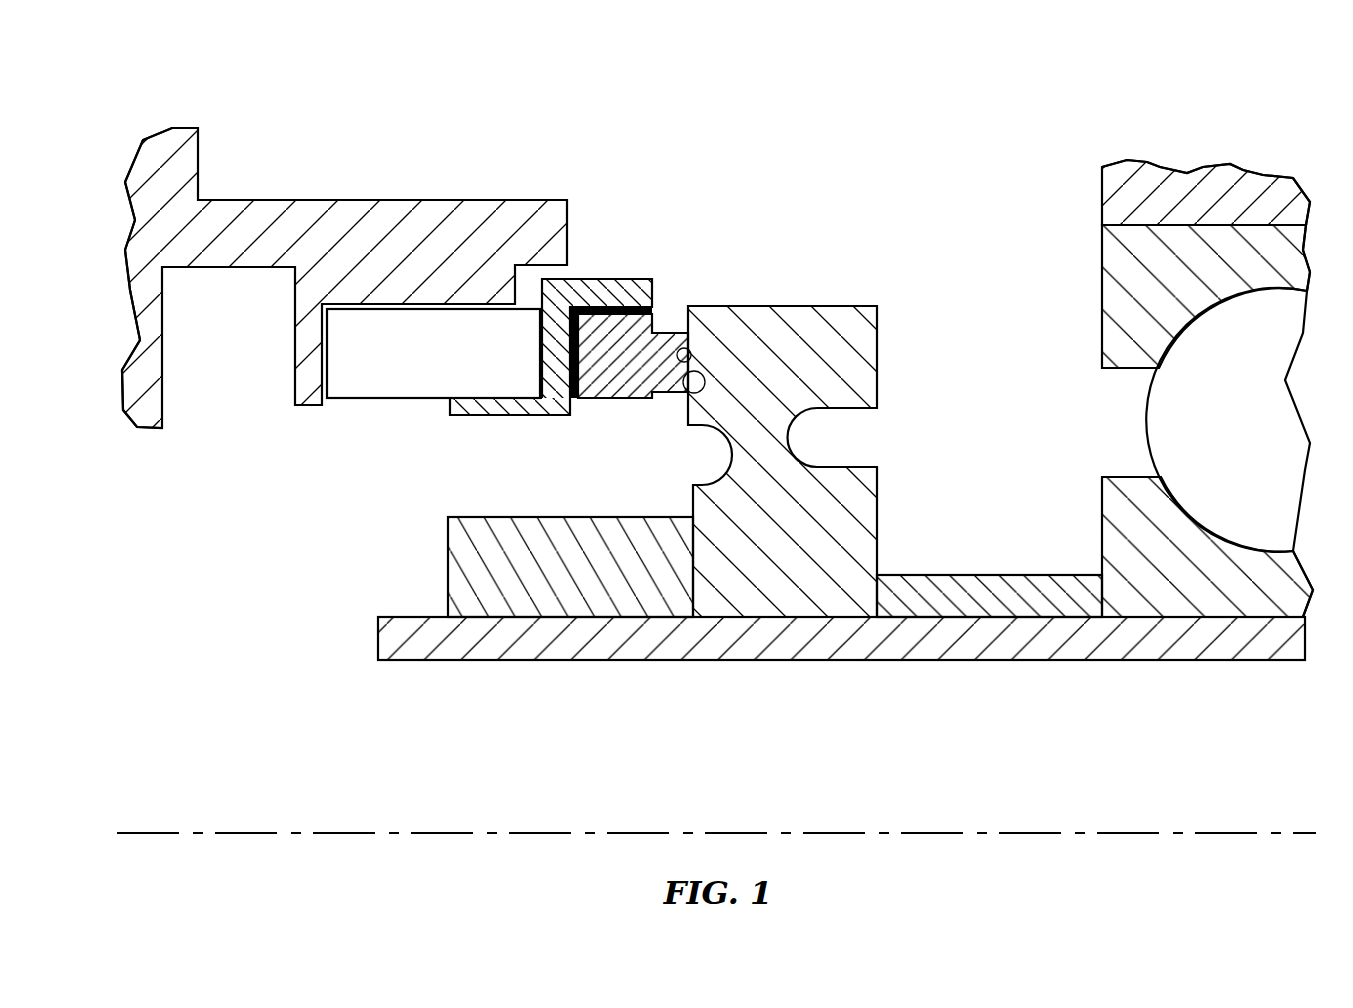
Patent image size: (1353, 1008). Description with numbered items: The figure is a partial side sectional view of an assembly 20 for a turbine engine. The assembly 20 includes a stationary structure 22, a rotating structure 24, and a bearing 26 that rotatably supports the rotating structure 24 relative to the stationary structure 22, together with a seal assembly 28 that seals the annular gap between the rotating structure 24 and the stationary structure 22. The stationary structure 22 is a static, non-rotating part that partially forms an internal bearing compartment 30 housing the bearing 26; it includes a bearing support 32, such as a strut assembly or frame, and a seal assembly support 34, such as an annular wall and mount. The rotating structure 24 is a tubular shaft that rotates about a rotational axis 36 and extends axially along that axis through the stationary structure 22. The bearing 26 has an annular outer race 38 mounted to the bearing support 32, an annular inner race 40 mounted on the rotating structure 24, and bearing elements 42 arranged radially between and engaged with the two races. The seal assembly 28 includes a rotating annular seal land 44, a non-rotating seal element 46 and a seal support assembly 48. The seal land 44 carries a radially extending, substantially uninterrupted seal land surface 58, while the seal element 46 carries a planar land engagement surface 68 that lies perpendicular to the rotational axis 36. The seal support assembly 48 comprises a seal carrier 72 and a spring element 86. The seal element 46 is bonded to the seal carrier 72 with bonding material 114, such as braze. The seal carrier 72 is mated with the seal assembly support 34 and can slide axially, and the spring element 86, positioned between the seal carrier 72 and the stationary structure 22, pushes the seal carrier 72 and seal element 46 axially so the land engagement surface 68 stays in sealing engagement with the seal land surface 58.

The assembly 20 is at (1055, 88).
The stationary structure 22 is at (184, 118).
The rotating structure 24 is at (357, 640).
The bearing 26 is at (1064, 301).
The seal assembly 28 is at (737, 240).
The bearing compartment 30 is at (887, 155).
The bearing support 32 is at (1183, 161).
The seal assembly support 34 is at (396, 199).
The rotational axis 36 is at (1305, 832).
The outer race 38 is at (1101, 247).
The inner race 40 is at (1101, 498).
The bearing elements 42 is at (1148, 420).
The seal land 44 is at (848, 306).
The seal element 46 is at (617, 421).
The seal support assembly 48 is at (452, 433).
The seal land surface 58 is at (689, 345).
The land engagement surface 68 is at (698, 393).
The seal carrier 72 is at (603, 280).
The spring element 86 is at (364, 414).
The bonding material 114 is at (646, 312).